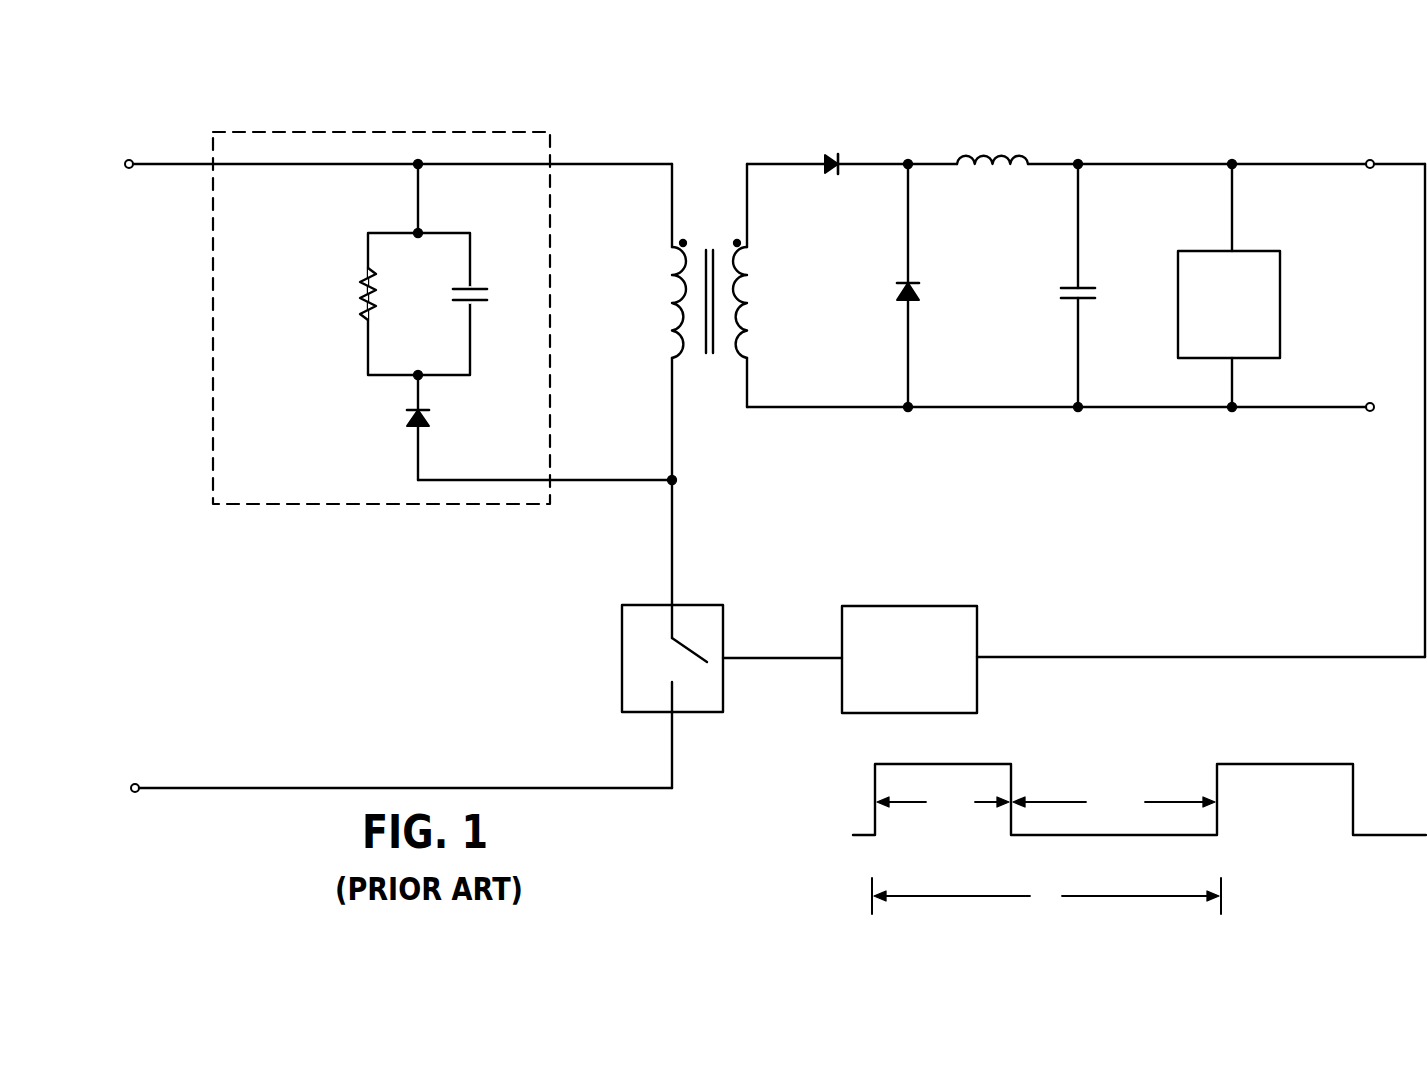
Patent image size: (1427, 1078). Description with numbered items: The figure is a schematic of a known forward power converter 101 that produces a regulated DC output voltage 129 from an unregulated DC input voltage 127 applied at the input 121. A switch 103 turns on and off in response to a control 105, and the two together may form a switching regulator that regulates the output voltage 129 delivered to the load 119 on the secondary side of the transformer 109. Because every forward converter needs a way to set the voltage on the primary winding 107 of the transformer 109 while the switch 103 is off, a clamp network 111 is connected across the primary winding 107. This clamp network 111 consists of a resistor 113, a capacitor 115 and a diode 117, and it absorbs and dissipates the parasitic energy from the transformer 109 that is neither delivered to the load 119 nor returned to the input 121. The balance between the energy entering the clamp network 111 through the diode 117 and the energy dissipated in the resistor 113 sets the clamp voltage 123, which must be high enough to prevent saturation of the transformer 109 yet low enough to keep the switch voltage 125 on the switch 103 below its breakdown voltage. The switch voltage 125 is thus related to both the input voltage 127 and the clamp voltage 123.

The forward power converter 101 is at (1285, 74).
The switch Q1 103 is at (651, 684).
The control 105 is at (952, 601).
The primary winding 107 is at (663, 304).
The transformer 109 is at (712, 204).
The clamp network 111 is at (472, 129).
The resistor 113 is at (350, 272).
The capacitor 115 is at (509, 271).
The diode 117 is at (396, 423).
The load 119 is at (1260, 250).
The input 121 is at (132, 150).
The clamp voltage VCLAMP 123 is at (281, 362).
The switch voltage VSWITCH 125 is at (490, 688).
The input voltage VIN 127 is at (170, 522).
The output voltage VOUT 129 is at (1345, 310).